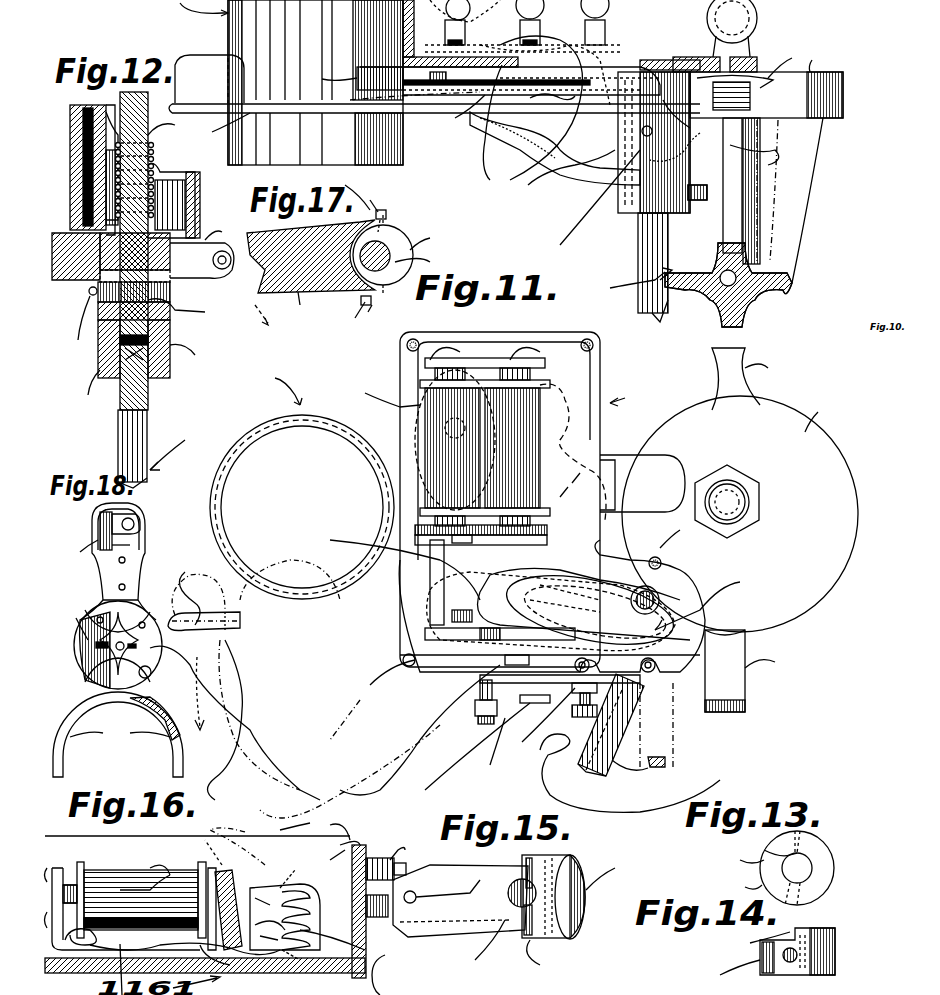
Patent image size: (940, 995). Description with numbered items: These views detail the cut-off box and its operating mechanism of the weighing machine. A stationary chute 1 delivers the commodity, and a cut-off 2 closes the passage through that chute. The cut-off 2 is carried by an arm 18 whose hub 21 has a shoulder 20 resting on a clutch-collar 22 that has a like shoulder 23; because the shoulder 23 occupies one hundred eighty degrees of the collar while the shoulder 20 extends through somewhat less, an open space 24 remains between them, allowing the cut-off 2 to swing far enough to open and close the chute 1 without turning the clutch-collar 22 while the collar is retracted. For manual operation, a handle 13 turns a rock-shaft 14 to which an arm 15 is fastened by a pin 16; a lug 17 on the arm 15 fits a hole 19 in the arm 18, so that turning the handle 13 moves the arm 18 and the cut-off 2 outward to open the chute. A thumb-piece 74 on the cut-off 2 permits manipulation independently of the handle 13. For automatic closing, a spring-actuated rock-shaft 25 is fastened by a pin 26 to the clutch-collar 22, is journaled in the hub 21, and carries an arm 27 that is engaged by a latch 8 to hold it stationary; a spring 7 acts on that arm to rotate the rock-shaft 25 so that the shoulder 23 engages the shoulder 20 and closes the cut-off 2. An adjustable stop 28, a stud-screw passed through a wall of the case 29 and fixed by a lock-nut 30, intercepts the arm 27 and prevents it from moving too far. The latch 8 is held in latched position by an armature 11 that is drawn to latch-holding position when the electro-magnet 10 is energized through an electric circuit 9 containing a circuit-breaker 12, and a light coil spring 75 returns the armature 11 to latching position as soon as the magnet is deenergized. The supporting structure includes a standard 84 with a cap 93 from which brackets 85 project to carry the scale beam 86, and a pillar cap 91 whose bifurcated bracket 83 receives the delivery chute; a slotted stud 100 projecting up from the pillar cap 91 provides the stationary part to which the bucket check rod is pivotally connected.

In FIG. 10, the stationary chute 1 is at (197, 8).
In FIG. 11, the stationary chute 1 is at (281, 383).
In FIG. 10, the cut-off 2 is at (434, 130).
In FIG. 11, the cut-off 2 is at (291, 533).
In FIG. 12, the spring 7 is at (135, 251).
In FIG. 11, the spring 7 is at (575, 663).
In FIG. 11, the latch 8 is at (577, 687).
In FIG. 16, the latch 8 is at (260, 837).
In FIG. 10, the electric circuit 9 is at (570, 171).
In FIG. 11, the electric circuit 9 is at (584, 452).
In FIG. 11, the electro-magnet 10 is at (471, 499).
In FIG. 16, the electro-magnet 10 is at (134, 892).
In FIG. 10, the armature 11 is at (315, 82).
In FIG. 11, the armature 11 is at (571, 485).
In FIG. 16, the armature 11 is at (218, 895).
In FIG. 11, the circuit-breaker 12 is at (552, 606).
In FIG. 16, the circuit-breaker 12 is at (375, 965).
In FIG. 11, the handle 13 is at (668, 623).
In FIG. 10, the rock-shaft 14 is at (629, 267).
In FIG. 12, the rock-shaft 14 is at (158, 449).
In FIG. 10, the arm 15 is at (590, 165).
In FIG. 12, the arm 15 is at (186, 311).
In FIG. 10, the pin 16 is at (635, 200).
In FIG. 12, the pin 16 is at (156, 349).
In FIG. 10, the lug 17 is at (495, 120).
In FIG. 11, the lug 17 is at (550, 609).
In FIG. 10, the arm 18 is at (505, 105).
In FIG. 17, the arm 18 is at (311, 275).
In FIG. 15, the arm 18 is at (482, 949).
In FIG. 11, the hole 19 is at (584, 603).
In FIG. 15, the hole 19 is at (460, 901).
In FIG. 10, the shoulder 20 is at (696, 176).
In FIG. 17, the shoulder 20 is at (407, 256).
In FIG. 15, the shoulder 20 is at (540, 918).
In FIG. 10, the hub 21 is at (766, 77).
In FIG. 12, the hub 21 is at (143, 245).
In FIG. 15, the hub 21 is at (567, 896).
In FIG. 10, the clutch-collar 22 is at (757, 191).
In FIG. 12, the clutch-collar 22 is at (170, 300).
In FIG. 17, the clutch-collar 22 is at (397, 255).
In FIG. 13, the clutch-collar 22 is at (773, 868).
In FIG. 14, the clutch-collar 22 is at (760, 955).
In FIG. 10, the shoulder 23 is at (640, 98).
In FIG. 17, the shoulder 23 is at (377, 254).
In FIG. 13, the shoulder 23 is at (752, 859).
In FIG. 14, the shoulder 23 is at (755, 952).
In FIG. 10, the open space 24 is at (701, 180).
In FIG. 17, the open space 24 is at (349, 190).
In FIG. 12, the spring-actuated rock-shaft 25 is at (79, 386).
In FIG. 11, the spring-actuated rock-shaft 25 is at (664, 546).
In FIG. 16, the spring-actuated rock-shaft 25 is at (345, 825).
In FIG. 10, the pin 26 is at (598, 188).
In FIG. 12, the pin 26 is at (74, 322).
In FIG. 17, the pin 26 is at (351, 320).
In FIG. 11, the arm 27 is at (372, 700).
In FIG. 11, the adjustable stop 28 is at (482, 729).
In FIG. 16, the adjustable stop 28 is at (392, 876).
In FIG. 11, the case 29 is at (458, 707).
In FIG. 16, the case 29 is at (223, 920).
In FIG. 11, the lock-nut 30 is at (473, 749).
In FIG. 16, the lock-nut 30 is at (340, 845).
In FIG. 10, the thumb-piece 74 is at (209, 79).
In FIG. 11, the thumb-piece 74 is at (254, 672).
In FIG. 10, the coil spring 75 is at (522, 97).
In FIG. 18, the bracket 83 is at (118, 734).
In FIG. 10, the standard 84 is at (785, 232).
In FIG. 11, the brackets 85 is at (716, 557).
In FIG. 10, the scale beam 86 is at (496, 45).
In FIG. 18, the pillar cap 91 is at (101, 551).
In FIG. 10, the cap 93 is at (754, 36).
In FIG. 11, the cap 93 is at (729, 513).
In FIG. 18, the slotted stud 100 is at (104, 644).